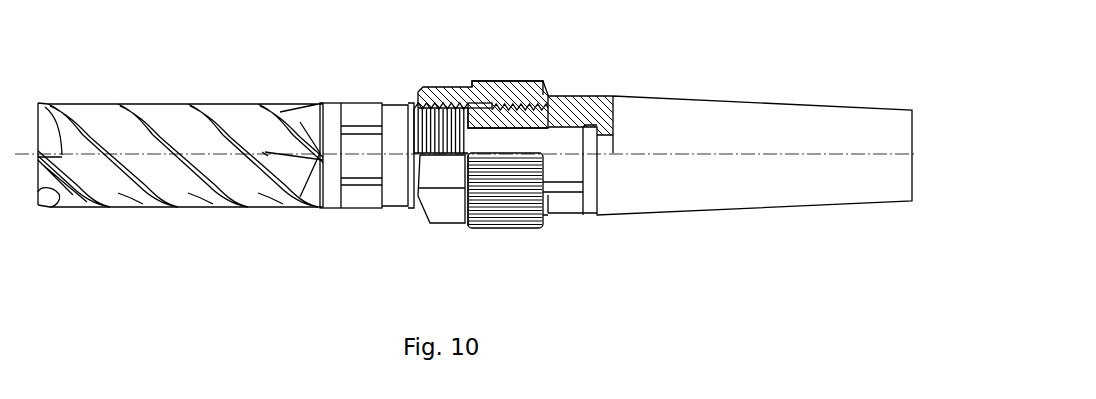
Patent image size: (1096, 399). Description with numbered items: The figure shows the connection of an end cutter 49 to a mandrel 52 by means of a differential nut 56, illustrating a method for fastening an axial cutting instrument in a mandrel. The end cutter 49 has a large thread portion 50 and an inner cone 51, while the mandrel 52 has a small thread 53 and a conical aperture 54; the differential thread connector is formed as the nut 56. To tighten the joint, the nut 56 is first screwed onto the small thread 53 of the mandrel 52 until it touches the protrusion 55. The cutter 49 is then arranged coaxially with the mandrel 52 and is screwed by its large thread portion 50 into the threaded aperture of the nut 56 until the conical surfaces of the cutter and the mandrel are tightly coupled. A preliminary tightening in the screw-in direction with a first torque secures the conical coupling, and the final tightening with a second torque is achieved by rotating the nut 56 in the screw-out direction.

The end cutter 49 is at (265, 98).
The large thread portion 50 is at (420, 99).
The inner cone 51 is at (481, 108).
The mandrel 52 is at (627, 122).
The small thread 53 is at (495, 99).
The conical aperture 54 is at (545, 134).
The protrusion 55 is at (538, 97).
The nut 56 is at (445, 210).